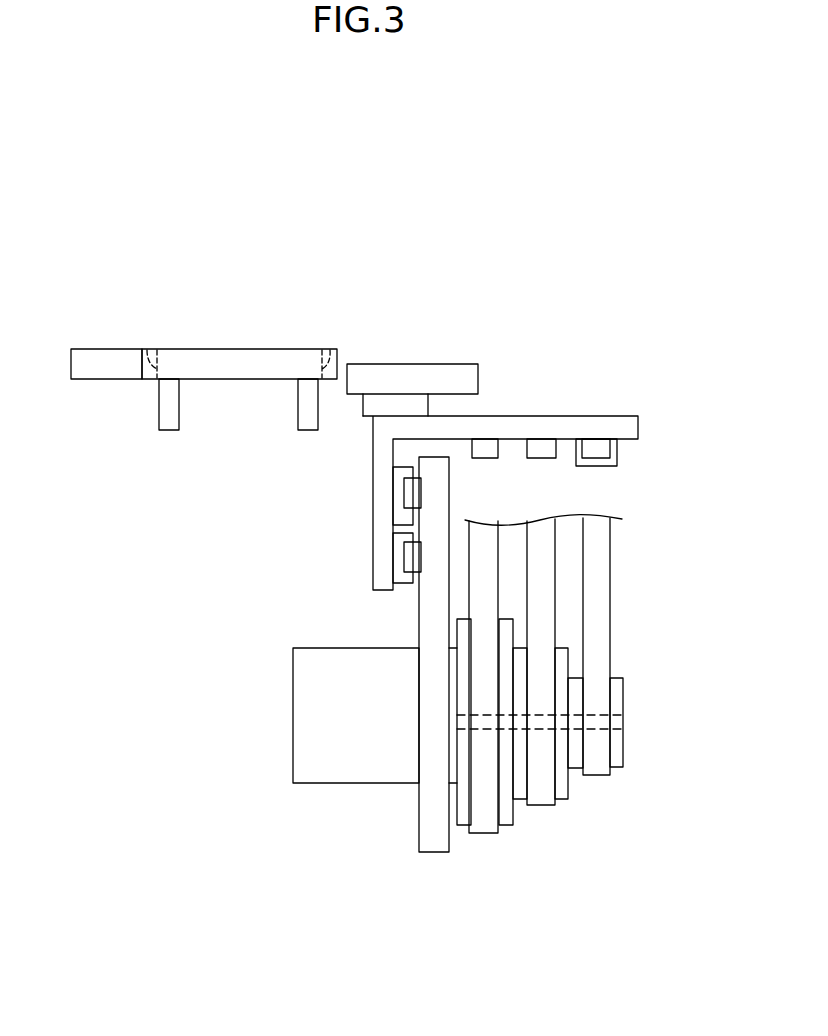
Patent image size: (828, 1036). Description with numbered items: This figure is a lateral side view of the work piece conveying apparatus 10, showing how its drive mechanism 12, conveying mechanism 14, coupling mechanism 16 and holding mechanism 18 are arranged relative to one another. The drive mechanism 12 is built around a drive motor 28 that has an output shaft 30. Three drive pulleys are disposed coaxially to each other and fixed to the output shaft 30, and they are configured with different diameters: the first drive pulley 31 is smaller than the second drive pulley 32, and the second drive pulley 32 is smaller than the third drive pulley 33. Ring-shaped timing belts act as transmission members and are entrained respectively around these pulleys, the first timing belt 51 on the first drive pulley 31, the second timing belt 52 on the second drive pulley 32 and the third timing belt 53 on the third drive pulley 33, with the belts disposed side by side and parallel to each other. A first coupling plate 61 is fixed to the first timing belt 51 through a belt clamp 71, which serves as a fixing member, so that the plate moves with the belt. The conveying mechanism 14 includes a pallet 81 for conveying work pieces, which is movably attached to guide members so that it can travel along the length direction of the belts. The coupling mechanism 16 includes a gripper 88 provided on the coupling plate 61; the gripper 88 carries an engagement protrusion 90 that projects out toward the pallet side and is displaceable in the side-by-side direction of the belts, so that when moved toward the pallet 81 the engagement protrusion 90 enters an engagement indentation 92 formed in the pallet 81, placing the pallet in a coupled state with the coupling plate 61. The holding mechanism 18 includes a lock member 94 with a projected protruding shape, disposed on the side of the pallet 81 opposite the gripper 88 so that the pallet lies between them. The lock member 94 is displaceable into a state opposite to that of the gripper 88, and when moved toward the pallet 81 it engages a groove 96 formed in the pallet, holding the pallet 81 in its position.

The work piece conveying apparatus 10 is at (377, 191).
The drive mechanism 12 is at (529, 880).
The conveying mechanism 14 is at (209, 284).
The coupling mechanism 16 is at (431, 336).
The holding mechanism 18 is at (82, 310).
The drive motor 28 is at (325, 785).
The output shaft 30 is at (595, 731).
The first drive pulley 31 is at (618, 769).
The second drive pulley 32 is at (560, 800).
The third drive pulley 33 is at (507, 827).
The first timing belt 51 is at (610, 552).
The second timing belt 52 is at (555, 578).
The third timing belt 53 is at (498, 603).
The first coupling plate 61 is at (567, 416).
The belt clamp 71 is at (617, 451).
The pallet 81 is at (263, 348).
The gripper 88 is at (362, 403).
The engagement protrusion 90 is at (362, 363).
The engagement indentation 92 is at (330, 350).
The lock member 94 is at (118, 348).
The groove 96 is at (146, 350).